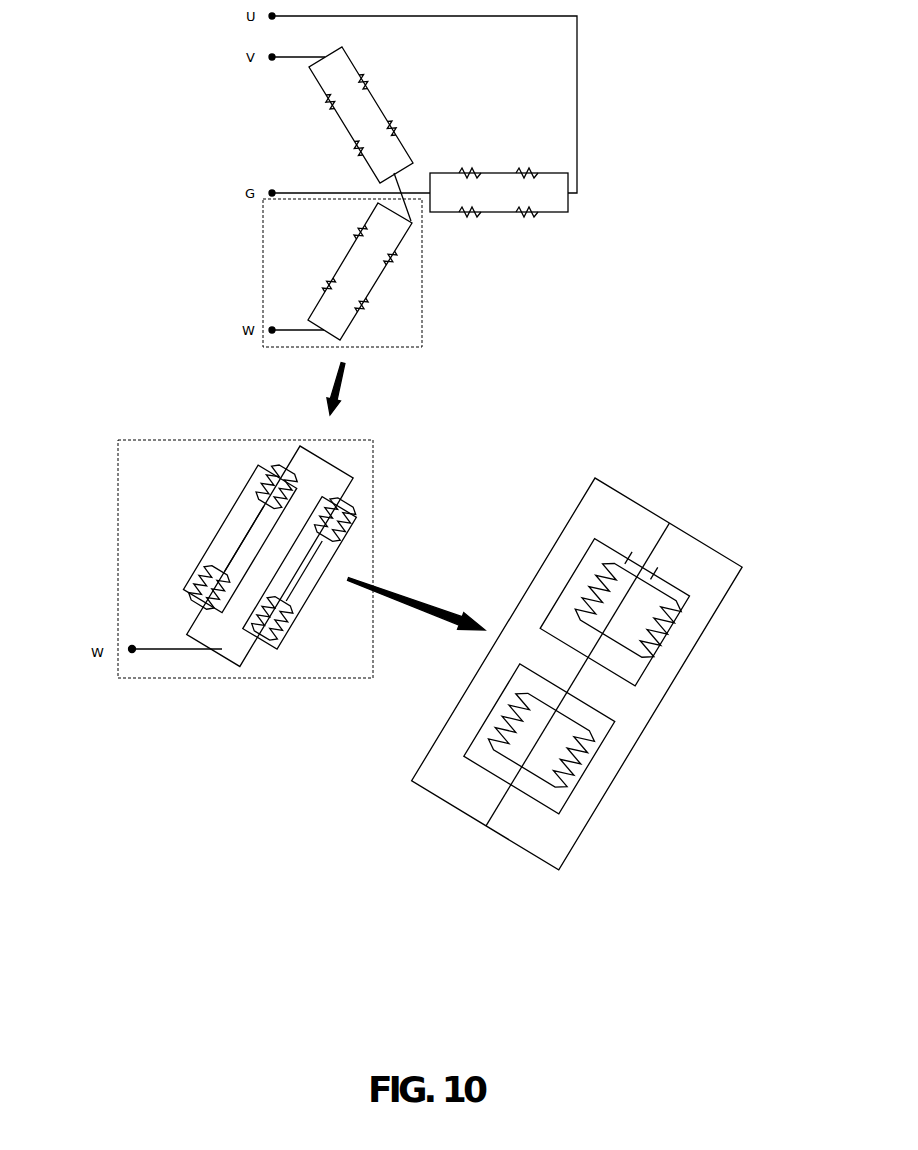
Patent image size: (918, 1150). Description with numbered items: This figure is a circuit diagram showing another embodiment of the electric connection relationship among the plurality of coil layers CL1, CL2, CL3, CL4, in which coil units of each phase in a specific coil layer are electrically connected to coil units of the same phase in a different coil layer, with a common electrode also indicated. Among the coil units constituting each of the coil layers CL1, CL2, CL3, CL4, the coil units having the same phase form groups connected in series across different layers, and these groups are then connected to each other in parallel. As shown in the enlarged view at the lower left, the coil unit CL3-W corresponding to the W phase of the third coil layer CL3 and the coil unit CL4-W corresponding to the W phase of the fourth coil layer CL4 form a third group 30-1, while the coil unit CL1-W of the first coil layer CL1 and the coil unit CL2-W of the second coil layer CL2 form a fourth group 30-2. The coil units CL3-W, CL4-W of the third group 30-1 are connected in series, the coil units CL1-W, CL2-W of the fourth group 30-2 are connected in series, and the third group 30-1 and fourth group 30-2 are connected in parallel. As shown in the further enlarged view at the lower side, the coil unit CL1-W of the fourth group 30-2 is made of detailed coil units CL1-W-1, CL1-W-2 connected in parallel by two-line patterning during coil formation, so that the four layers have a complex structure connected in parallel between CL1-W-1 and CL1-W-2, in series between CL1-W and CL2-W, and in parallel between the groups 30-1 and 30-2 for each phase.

The first coil layer CL1 is at (399, 203).
The second coil layer CL2 is at (413, 205).
The third coil layer CL3 is at (398, 179).
The fourth coil layer CL4 is at (414, 182).
The third group 30-1 is at (253, 466).
The fourth group 30-2 is at (351, 509).
The coil unit corresponding to the W phase of the first coil layer CL1-W is at (344, 539).
The coil unit corresponding to the W phase of the second coil layer CL2-W is at (296, 615).
The coil unit corresponding to the W phase of the third coil layer CL3-W is at (256, 490).
The coil unit corresponding to the W phase of the fourth coil layer CL4-W is at (204, 572).
The detailed coil unit CL1-W-1 is at (655, 573).
The detailed coil unit CL1-W-2 is at (629, 555).